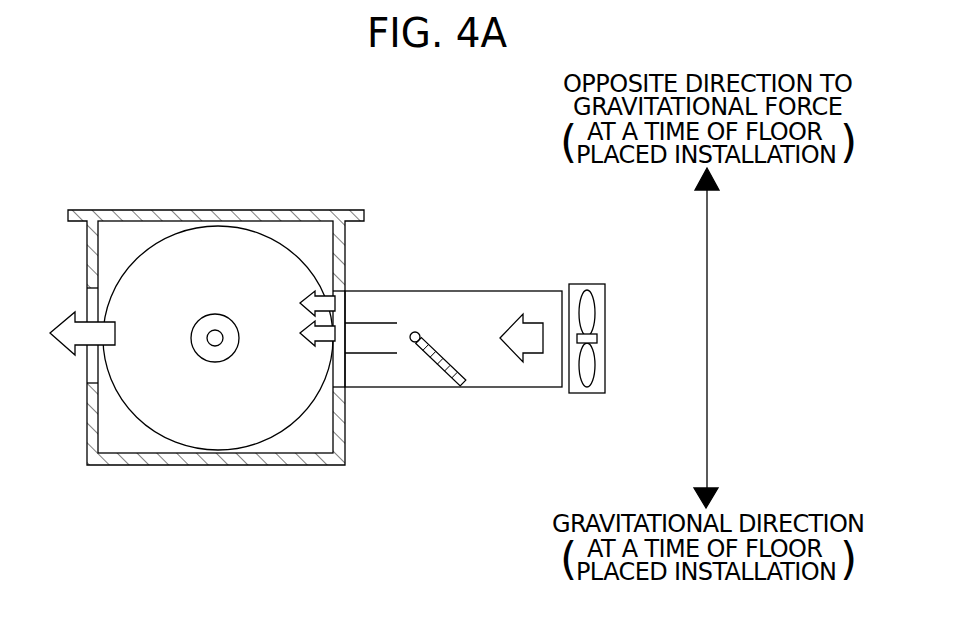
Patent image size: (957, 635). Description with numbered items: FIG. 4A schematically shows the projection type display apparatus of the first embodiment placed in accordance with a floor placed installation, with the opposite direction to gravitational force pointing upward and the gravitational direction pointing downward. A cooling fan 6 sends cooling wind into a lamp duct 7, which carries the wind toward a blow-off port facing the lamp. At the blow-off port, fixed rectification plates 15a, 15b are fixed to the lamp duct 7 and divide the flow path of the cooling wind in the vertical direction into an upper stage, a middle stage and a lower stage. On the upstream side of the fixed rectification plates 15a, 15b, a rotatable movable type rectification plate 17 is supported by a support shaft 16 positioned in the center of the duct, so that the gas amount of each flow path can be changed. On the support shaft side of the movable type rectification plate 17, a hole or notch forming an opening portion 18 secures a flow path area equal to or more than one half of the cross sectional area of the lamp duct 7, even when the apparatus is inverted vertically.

The cooling fan 6 is at (587, 284).
The lamp duct 7 is at (393, 290).
The fixed rectification plate 15a is at (392, 323).
The fixed rectification plate 15b is at (372, 355).
The support shaft 16 is at (417, 332).
The movable type rectification plate 17 is at (443, 372).
The opening portion 18 is at (421, 351).